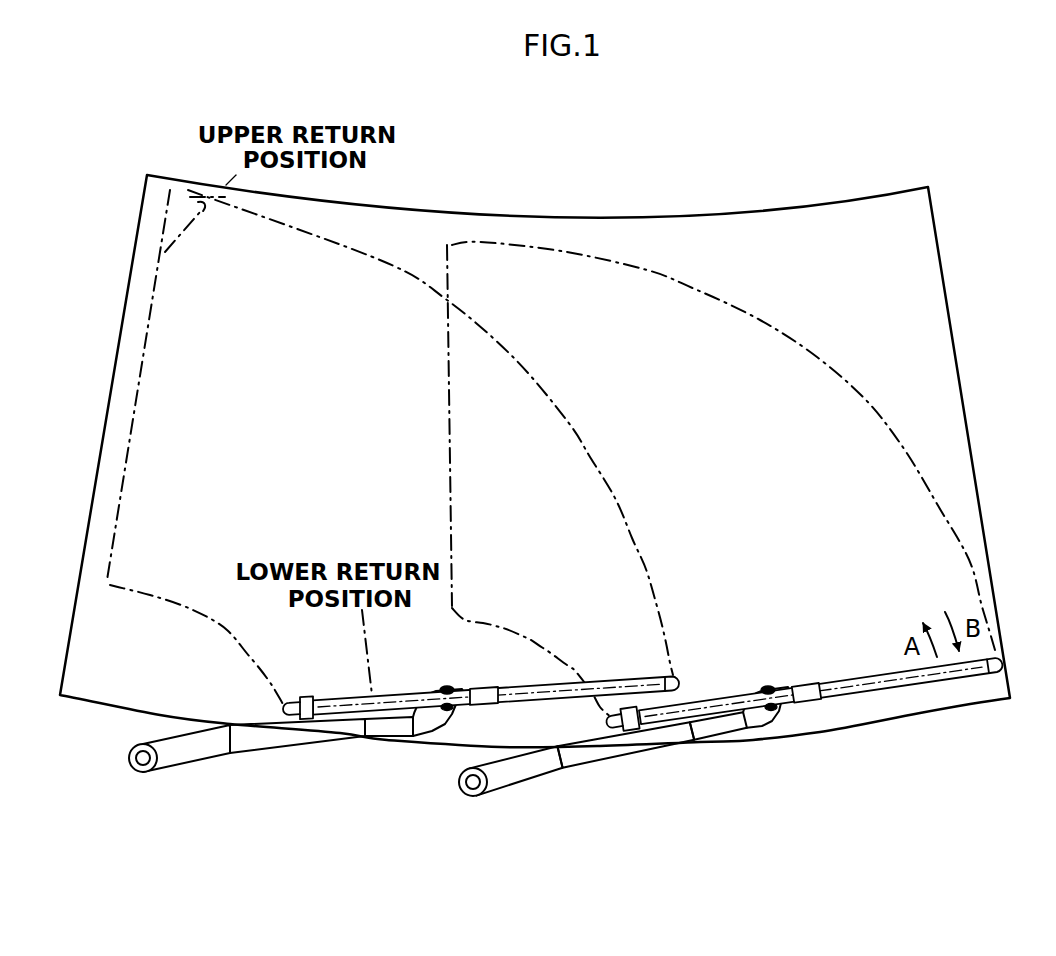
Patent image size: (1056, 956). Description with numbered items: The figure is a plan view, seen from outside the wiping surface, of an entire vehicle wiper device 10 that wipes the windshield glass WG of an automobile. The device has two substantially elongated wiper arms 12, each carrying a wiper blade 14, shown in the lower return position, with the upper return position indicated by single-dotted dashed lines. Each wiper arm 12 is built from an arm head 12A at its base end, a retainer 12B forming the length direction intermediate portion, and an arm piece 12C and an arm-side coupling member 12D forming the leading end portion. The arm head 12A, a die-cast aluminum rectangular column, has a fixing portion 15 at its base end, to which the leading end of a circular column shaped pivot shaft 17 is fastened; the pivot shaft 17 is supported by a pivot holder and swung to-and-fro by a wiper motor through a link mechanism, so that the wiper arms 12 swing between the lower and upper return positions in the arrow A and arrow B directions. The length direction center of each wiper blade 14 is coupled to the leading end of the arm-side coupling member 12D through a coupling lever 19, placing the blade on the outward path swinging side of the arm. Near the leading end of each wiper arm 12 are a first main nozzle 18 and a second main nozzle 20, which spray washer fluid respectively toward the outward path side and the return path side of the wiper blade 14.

The vehicle wiper device 10 is at (533, 737).
The wiper arm 12 is at (467, 772).
The arm head 12A is at (190, 762).
The retainer 12B is at (277, 736).
The arm piece 12C is at (379, 738).
The arm-side coupling member 12D is at (430, 733).
The wiper blade 14 is at (642, 690).
The fixing portion 15 is at (147, 772).
The pivot shaft 17 is at (128, 760).
The first main nozzle 18 is at (442, 686).
The coupling lever 19 is at (488, 689).
The second main nozzle 20 is at (458, 708).
The windshield glass WG is at (898, 207).